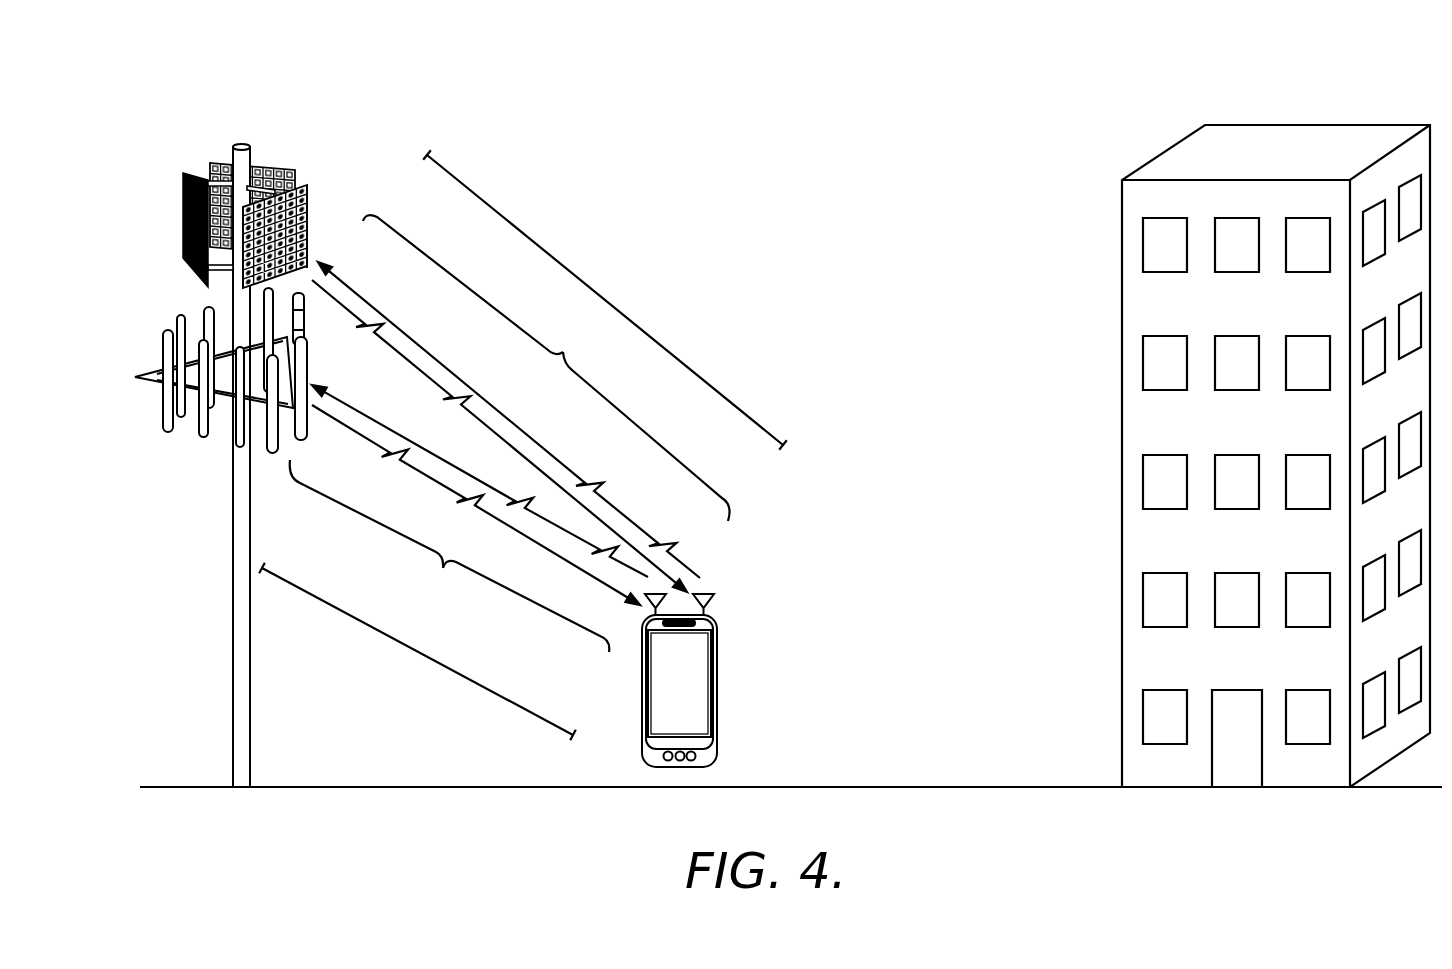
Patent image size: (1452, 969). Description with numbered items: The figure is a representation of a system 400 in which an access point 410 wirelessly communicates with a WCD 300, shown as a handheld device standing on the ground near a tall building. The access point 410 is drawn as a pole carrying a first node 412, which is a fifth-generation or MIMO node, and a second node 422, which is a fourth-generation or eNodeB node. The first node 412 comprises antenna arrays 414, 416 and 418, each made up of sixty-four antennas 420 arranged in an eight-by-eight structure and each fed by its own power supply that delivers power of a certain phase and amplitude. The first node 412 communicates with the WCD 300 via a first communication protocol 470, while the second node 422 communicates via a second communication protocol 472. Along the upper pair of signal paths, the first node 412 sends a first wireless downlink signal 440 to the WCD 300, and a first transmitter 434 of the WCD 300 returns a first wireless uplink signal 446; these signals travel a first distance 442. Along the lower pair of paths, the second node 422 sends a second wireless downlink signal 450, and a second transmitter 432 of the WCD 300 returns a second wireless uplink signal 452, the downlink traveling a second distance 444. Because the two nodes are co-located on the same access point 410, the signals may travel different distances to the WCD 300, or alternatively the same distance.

The system 400 is at (615, 64).
The access point 410 is at (173, 540).
The first node 412 is at (327, 180).
The antenna array 414 is at (222, 164).
The antenna array 416 is at (182, 229).
The antenna array 418 is at (255, 303).
The antennas 420 is at (308, 224).
The second node 422 is at (197, 423).
The WCD 300 is at (637, 697).
The second transmitter 432 is at (647, 609).
The first transmitter 434 is at (713, 609).
The first wireless downlink signal 440 is at (478, 420).
The first distance 442 is at (599, 293).
The second distance 444 is at (402, 645).
The first wireless uplink signal 446 is at (373, 306).
The second wireless downlink signal 450 is at (541, 547).
The second wireless uplink signal 452 is at (351, 406).
The first communication protocol 470 is at (563, 353).
The second communication protocol 472 is at (443, 568).